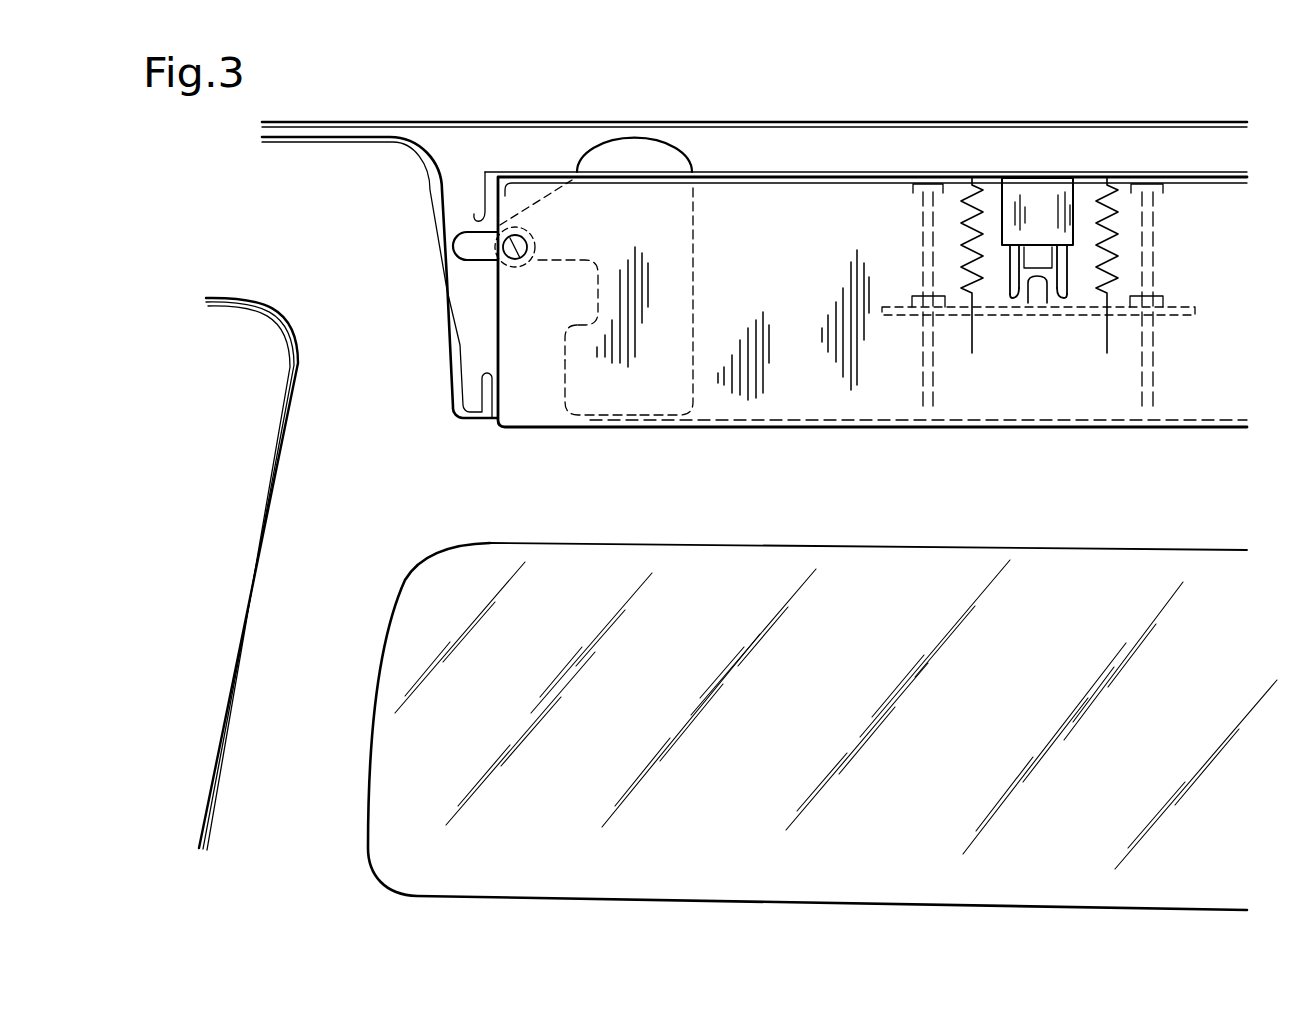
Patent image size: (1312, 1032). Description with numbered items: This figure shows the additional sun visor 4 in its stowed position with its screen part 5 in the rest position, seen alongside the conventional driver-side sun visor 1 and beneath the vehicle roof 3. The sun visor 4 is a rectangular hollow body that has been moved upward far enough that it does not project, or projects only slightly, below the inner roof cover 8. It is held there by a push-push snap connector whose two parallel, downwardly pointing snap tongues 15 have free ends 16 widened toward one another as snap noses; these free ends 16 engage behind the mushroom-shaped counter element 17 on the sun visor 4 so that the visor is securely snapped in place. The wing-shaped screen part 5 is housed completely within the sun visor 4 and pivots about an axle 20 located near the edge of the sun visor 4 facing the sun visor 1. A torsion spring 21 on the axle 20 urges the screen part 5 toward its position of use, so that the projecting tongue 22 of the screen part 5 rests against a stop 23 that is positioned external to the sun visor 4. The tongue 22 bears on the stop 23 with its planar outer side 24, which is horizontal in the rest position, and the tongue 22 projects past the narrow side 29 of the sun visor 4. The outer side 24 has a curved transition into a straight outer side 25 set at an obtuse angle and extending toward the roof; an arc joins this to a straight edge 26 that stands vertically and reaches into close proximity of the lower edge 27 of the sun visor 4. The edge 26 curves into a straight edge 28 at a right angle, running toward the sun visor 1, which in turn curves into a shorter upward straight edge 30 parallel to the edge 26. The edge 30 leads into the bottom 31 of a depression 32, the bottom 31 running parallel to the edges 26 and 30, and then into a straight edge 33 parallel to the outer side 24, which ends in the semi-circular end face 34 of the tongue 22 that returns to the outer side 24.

The sun visor 1 is at (233, 320).
The roof 3 is at (846, 127).
The sun visor 4 is at (815, 398).
The screen part 5 is at (633, 387).
The inner roof cover 8 is at (1243, 419).
The snap tongues 15 is at (1015, 268).
The free ends 16 is at (1015, 297).
The counter element 17 is at (1036, 283).
The axle 20 is at (498, 258).
The torsion spring 21 is at (533, 228).
The tongue 22 is at (465, 248).
The stop 23 is at (480, 214).
The outer side 24 is at (473, 228).
The outer side 25 is at (585, 168).
The straight edge 26 is at (695, 254).
The lower edge 27 is at (733, 429).
The straight edge 28 is at (597, 425).
The narrow side 29 is at (498, 308).
The straight edge 30 is at (562, 387).
The bottom 31 is at (600, 307).
The depression 32 is at (587, 293).
The straight edge 33 is at (552, 265).
The end face 34 is at (456, 237).